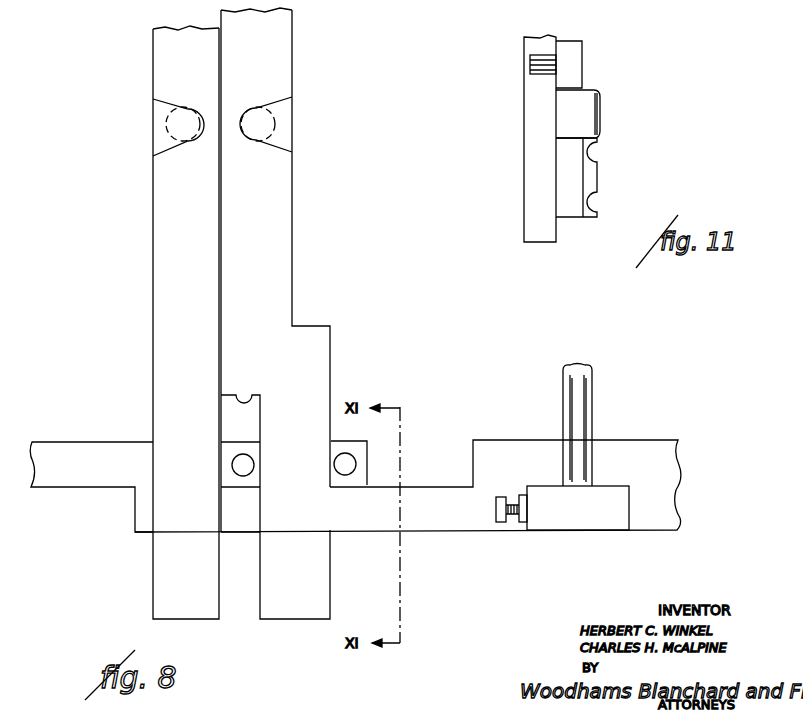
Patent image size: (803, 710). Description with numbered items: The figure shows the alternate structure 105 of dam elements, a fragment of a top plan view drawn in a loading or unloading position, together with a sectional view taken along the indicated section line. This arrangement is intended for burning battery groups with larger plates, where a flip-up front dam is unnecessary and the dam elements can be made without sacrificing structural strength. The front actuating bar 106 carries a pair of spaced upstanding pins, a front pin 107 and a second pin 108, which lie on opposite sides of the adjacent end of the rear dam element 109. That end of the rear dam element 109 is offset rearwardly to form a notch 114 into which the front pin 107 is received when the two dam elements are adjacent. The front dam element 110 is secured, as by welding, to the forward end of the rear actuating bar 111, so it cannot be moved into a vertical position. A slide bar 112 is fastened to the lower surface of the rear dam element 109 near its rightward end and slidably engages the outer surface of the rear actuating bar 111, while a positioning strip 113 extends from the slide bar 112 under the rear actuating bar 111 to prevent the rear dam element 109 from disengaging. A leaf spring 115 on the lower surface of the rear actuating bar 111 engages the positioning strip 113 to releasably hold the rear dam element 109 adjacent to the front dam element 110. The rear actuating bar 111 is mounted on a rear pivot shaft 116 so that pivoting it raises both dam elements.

In FIG. 8, the alternate structure 105 is at (352, 362).
In FIG. 8, the front actuating bar 106 is at (115, 445).
In FIG. 11, the front actuating bar 106 is at (576, 56).
In FIG. 8, the front pin 107 is at (257, 465).
In FIG. 8, the pin 108 is at (356, 463).
In FIG. 11, the pin 108 is at (533, 63).
In FIG. 8, the rear dam element 109 is at (275, 188).
In FIG. 11, the rear dam element 109 is at (533, 114).
In FIG. 8, the front dam element 110 is at (178, 259).
In FIG. 8, the rear actuating bar 111 is at (474, 524).
In FIG. 11, the slide bar 112 is at (567, 208).
In FIG. 11, the positioning strip 113 is at (589, 172).
In FIG. 8, the notch 114 is at (247, 395).
In FIG. 11, the leaf spring 115 is at (590, 107).
In FIG. 8, the rear pivot shaft 116 is at (584, 401).